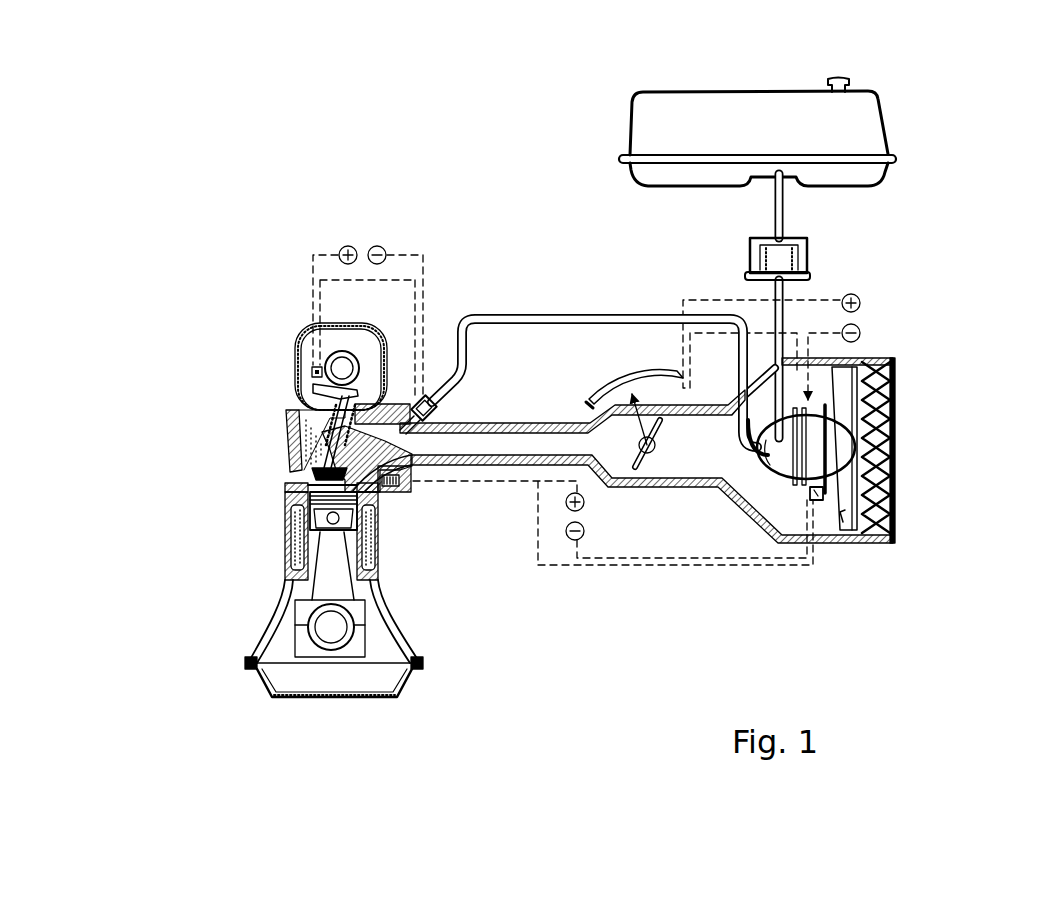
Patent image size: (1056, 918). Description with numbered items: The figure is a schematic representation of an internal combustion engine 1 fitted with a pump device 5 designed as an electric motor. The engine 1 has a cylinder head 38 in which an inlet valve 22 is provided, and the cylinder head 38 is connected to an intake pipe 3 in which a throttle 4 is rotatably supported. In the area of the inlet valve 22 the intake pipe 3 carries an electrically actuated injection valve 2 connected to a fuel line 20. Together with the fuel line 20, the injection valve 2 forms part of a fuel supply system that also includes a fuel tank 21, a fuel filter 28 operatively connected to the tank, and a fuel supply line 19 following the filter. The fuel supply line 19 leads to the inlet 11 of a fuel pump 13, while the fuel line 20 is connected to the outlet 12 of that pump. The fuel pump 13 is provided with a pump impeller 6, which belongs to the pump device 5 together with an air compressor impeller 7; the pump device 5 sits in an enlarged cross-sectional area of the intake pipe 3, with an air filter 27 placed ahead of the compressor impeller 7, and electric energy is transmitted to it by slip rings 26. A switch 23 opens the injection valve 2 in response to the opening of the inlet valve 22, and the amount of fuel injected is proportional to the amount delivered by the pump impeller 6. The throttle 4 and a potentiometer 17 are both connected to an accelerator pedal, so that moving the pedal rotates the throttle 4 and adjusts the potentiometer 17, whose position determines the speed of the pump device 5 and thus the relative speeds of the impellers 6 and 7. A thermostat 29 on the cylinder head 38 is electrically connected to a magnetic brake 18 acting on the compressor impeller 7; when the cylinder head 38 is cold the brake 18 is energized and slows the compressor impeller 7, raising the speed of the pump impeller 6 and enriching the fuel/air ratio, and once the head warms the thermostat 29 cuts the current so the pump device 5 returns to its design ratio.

The internal combustion engine 1 is at (285, 581).
The injection valve 2 is at (424, 395).
The intake pipe 3 is at (608, 480).
The throttle 4 is at (660, 470).
The pump device 5 is at (812, 448).
The pump impeller 6 is at (700, 484).
The compressor impeller 7 is at (842, 514).
The inlet 11 is at (776, 390).
The outlet 12 is at (765, 472).
The fuel pump 13 is at (783, 478).
The potentiometer 17 is at (640, 372).
The magnetic brake 18 is at (820, 500).
The fuel supply line 19 is at (783, 298).
The fuel line 20 is at (650, 318).
The fuel tank 21 is at (840, 142).
The inlet valve 22 is at (293, 455).
The switch 23 is at (295, 358).
The slip rings 26 is at (840, 412).
The air filter 27 is at (884, 474).
The fuel filter 28 is at (750, 260).
The thermostat 29 is at (405, 477).
The cylinder head 38 is at (297, 483).